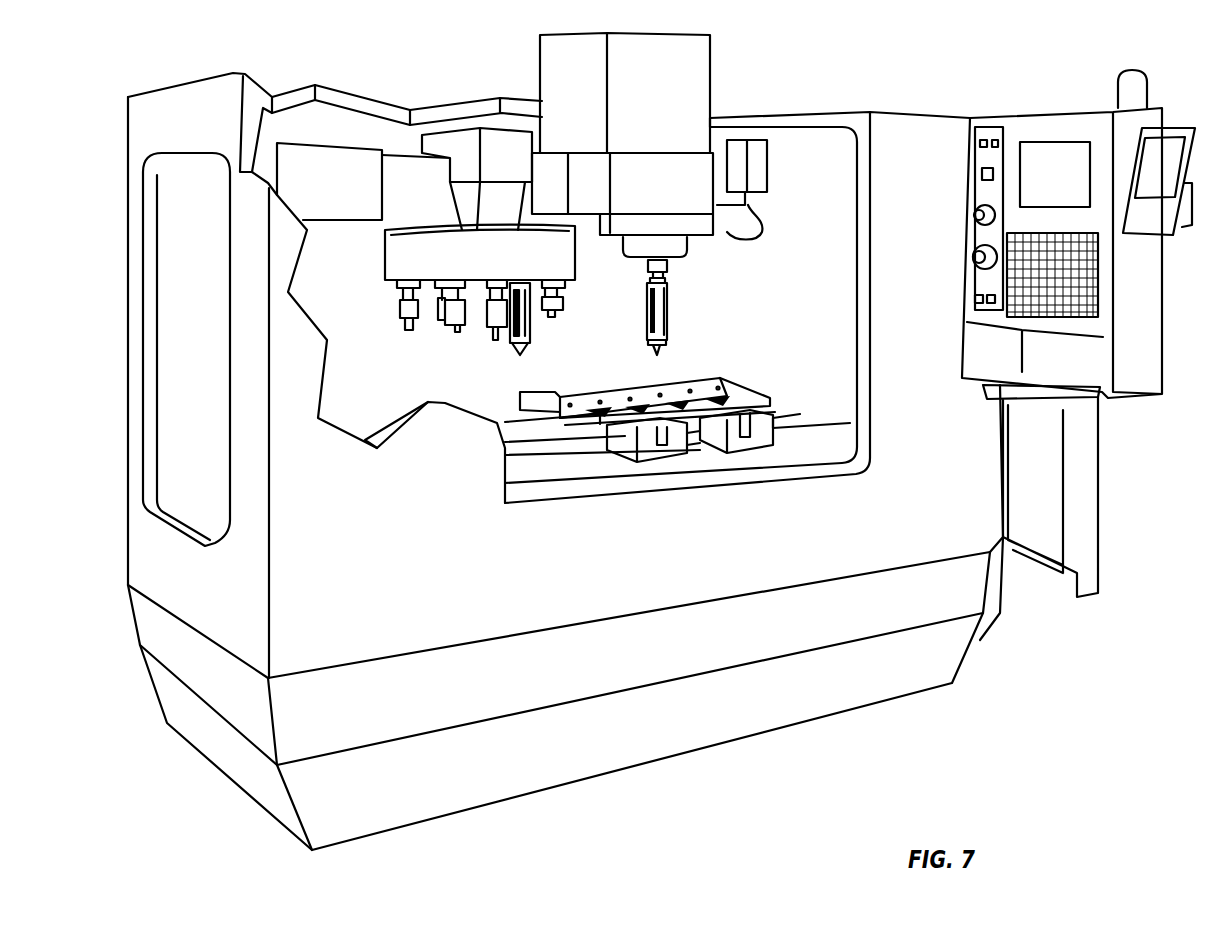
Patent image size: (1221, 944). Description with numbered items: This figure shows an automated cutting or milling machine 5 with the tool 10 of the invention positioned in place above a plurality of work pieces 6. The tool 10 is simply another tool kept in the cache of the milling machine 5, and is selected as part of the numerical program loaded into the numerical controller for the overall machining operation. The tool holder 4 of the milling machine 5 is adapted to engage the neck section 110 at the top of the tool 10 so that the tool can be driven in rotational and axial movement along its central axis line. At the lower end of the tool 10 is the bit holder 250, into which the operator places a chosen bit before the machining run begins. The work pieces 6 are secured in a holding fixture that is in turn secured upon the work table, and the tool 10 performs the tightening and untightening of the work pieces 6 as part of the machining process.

The milling machine 5 is at (183, 77).
The tool holder 4 is at (650, 262).
The neck section 110 is at (665, 278).
The tool 10 is at (647, 311).
The bit holder 250 is at (661, 348).
The work pieces 6 is at (740, 400).